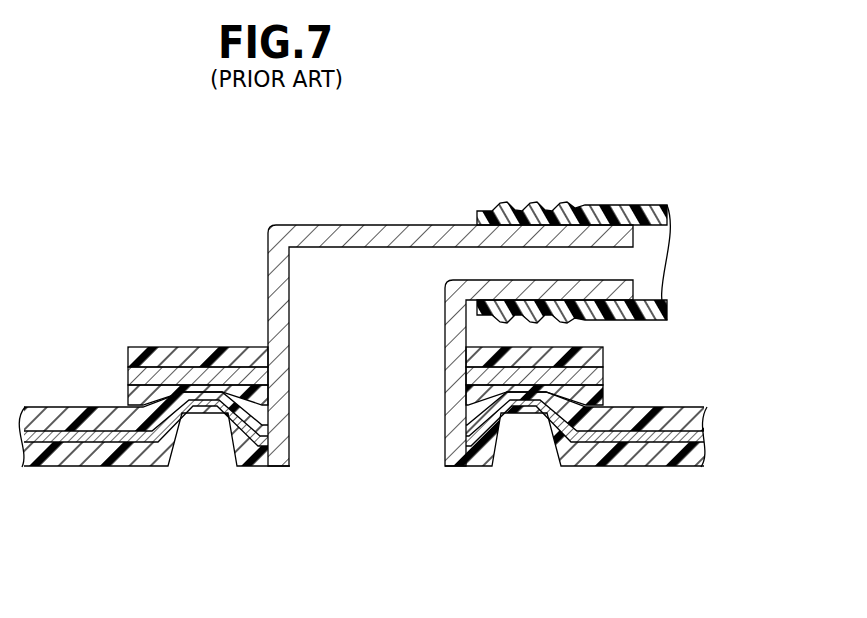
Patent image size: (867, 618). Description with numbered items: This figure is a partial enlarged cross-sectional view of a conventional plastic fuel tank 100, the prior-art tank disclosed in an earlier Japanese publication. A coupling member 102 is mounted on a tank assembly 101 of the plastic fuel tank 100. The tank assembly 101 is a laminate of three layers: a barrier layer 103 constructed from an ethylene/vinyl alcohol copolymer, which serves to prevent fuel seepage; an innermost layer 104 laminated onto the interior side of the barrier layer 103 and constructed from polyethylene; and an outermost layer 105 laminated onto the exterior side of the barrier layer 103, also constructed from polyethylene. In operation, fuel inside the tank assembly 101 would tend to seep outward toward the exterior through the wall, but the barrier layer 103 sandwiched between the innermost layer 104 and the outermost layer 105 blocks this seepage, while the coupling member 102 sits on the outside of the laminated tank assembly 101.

The plastic fuel tank 100 is at (447, 93).
The tank assembly 101 is at (113, 482).
The coupling member 102 is at (272, 228).
The barrier layer 103 is at (698, 432).
The innermost layer 104 is at (664, 473).
The outermost layer 105 is at (680, 407).